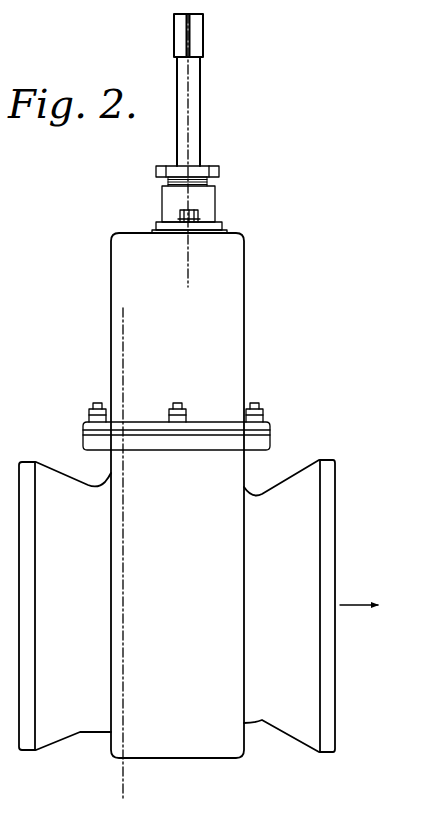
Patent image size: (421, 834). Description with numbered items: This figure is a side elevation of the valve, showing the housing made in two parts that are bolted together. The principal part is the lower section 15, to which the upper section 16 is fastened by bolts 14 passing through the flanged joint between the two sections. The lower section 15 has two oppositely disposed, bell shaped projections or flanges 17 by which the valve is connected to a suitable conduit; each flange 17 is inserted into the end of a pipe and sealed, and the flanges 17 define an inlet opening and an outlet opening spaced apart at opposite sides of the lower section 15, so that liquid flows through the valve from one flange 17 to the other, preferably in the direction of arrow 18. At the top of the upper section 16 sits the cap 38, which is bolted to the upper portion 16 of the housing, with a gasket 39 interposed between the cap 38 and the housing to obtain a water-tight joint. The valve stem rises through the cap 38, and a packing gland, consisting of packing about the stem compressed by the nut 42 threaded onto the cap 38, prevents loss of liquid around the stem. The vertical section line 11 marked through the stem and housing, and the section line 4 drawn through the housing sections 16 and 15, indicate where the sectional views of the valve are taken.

The section line 11 is at (186, 136).
The nut 42 is at (220, 171).
The cap 38 is at (207, 198).
The gasket 39 is at (223, 227).
The upper section 16 is at (233, 298).
The lower section 15 is at (198, 752).
The section line 4 is at (121, 322).
The bolts 14 is at (252, 404).
The flanges 17 is at (97, 725).
The arrow 18 is at (353, 607).